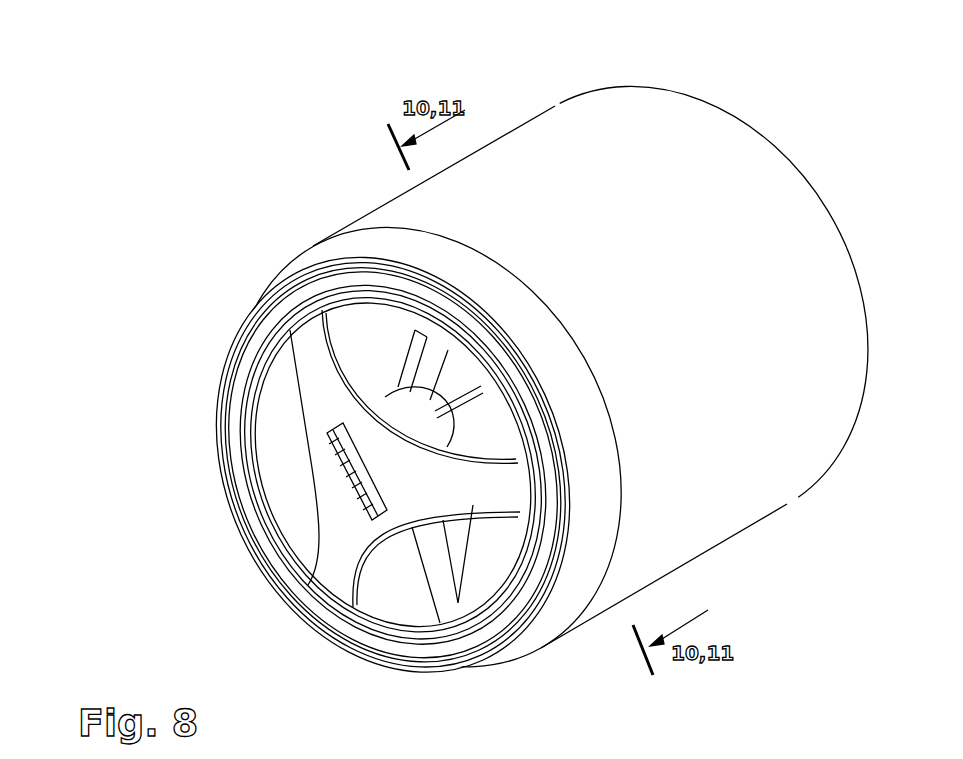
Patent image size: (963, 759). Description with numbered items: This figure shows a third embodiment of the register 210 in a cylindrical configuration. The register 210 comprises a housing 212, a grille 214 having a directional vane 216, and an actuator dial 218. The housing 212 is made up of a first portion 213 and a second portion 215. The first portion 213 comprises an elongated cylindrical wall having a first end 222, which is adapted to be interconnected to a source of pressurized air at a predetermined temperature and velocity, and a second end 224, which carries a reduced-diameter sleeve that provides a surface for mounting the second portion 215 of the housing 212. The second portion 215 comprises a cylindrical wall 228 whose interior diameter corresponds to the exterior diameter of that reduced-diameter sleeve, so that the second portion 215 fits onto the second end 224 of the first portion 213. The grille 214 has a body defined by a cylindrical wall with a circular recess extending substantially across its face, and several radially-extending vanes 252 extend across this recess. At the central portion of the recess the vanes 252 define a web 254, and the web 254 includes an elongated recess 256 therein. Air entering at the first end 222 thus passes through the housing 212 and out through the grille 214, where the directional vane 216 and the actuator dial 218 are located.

The register 210 is at (185, 407).
The housing 212 is at (565, 100).
The first portion 213 is at (785, 224).
The grille 214 is at (286, 688).
The second portion 215 is at (346, 253).
The directional vane 216 is at (507, 478).
The actuator dial 218 is at (350, 493).
The first end 222 is at (743, 123).
The second end 224 is at (594, 604).
The cylindrical wall 228 is at (557, 615).
The radially-extending vanes 252 is at (345, 577).
The web 254 is at (325, 447).
The elongated recess 256 is at (376, 480).